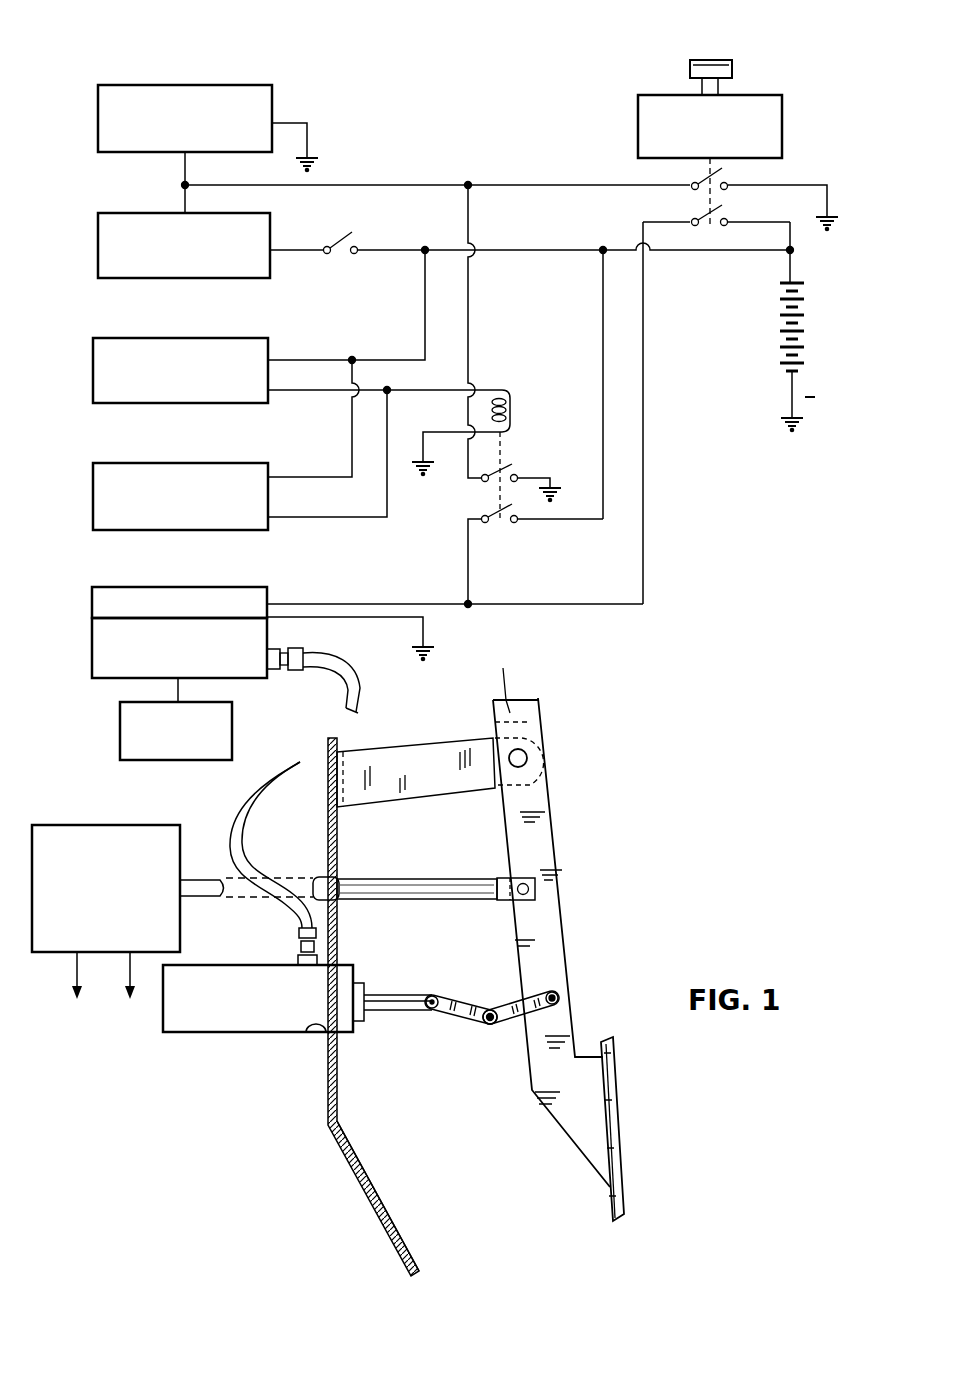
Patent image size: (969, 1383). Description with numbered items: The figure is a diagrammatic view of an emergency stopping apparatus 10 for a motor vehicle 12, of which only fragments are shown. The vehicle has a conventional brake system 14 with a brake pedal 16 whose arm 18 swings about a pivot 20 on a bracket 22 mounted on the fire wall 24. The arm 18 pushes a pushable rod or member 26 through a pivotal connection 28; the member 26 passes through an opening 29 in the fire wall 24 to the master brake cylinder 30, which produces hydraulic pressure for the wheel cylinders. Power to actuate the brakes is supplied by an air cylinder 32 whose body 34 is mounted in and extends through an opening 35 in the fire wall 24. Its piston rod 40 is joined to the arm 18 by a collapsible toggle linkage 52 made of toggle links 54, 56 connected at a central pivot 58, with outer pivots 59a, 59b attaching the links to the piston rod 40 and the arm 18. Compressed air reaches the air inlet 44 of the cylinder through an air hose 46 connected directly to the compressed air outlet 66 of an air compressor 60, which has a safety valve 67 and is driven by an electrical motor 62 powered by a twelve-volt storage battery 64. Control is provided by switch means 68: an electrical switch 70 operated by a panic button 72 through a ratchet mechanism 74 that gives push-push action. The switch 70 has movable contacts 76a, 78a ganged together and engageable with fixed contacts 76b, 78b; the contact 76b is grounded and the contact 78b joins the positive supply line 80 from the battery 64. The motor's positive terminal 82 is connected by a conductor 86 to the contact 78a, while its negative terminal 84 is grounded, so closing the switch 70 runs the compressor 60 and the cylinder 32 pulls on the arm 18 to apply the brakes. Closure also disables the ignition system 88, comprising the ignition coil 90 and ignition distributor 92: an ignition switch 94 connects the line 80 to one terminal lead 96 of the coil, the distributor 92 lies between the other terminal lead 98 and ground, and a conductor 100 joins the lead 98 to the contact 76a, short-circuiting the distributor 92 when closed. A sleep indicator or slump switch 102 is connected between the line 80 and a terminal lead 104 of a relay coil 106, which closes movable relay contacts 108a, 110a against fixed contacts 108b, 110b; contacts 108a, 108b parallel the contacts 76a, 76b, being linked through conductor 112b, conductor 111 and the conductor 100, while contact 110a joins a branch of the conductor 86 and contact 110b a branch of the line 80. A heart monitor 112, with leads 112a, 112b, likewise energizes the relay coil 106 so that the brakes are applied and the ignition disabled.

The emergency stopping apparatus 10 is at (386, 1042).
The motor vehicle 12 is at (331, 1205).
The brake system 14 is at (496, 944).
The brake pedal 16 is at (622, 1092).
The arm 18 is at (565, 921).
The pivot 20 is at (528, 752).
The bracket 22 is at (460, 738).
The fire wall 24 is at (338, 828).
The pushable rod or member 26 is at (445, 878).
The pivotal connection 28 is at (540, 886).
The opening 29 is at (340, 878).
The master brake cylinder 30 is at (105, 825).
The air cylinder 32 is at (192, 1046).
The body 34 is at (315, 1040).
The opening 35 is at (305, 1032).
The piston rod 40 is at (378, 1012).
The air inlet 44 is at (297, 955).
The air hose 46 is at (365, 690).
The toggle linkage 52 is at (507, 1037).
The toggle link 54 is at (468, 1020).
The toggle link 56 is at (512, 1022).
The pivot 58 is at (490, 1008).
The pivot 59a is at (432, 993).
The pivot 59b is at (560, 998).
The air compressor 60 is at (162, 635).
The electrical motor 62 is at (150, 587).
The storage battery 64 is at (808, 364).
The compressed air outlet 66 is at (291, 671).
The safety valve 67 is at (232, 728).
The switch means 68 is at (756, 166).
The electrical switch 70 is at (712, 230).
The panic button 72 is at (735, 68).
The ratchet mechanism 74 is at (782, 126).
The movable contact 76a is at (692, 183).
The fixed contact 76b is at (736, 172).
The movable contact 78a is at (692, 219).
The fixed contact 78b is at (730, 217).
The positive supply line 80 is at (788, 255).
The positive electrical terminal 82 is at (270, 603).
The negative electrical terminal 84 is at (270, 618).
The conductor 86 is at (381, 603).
The ignition system 88 is at (251, 176).
The ignition coil 90 is at (196, 280).
The ignition distributor 92 is at (213, 154).
The ignition switch 94 is at (351, 259).
The terminal lead 96 is at (291, 251).
The terminal lead 98 is at (183, 198).
The conductor 100 is at (395, 185).
The sleep indicator or slump switch 102 is at (176, 462).
The terminal lead 104 is at (487, 440).
The relay coil 106 is at (512, 406).
The movable relay contact 108a is at (505, 468).
The fixed relay contact 108b is at (520, 475).
The movable relay contact 110a is at (481, 513).
The fixed relay contact 110b is at (516, 525).
The relay line 111 is at (470, 302).
The heart monitor 112 is at (170, 405).
The heart monitor lead 112a is at (305, 358).
The heart monitor lead 112b is at (330, 393).